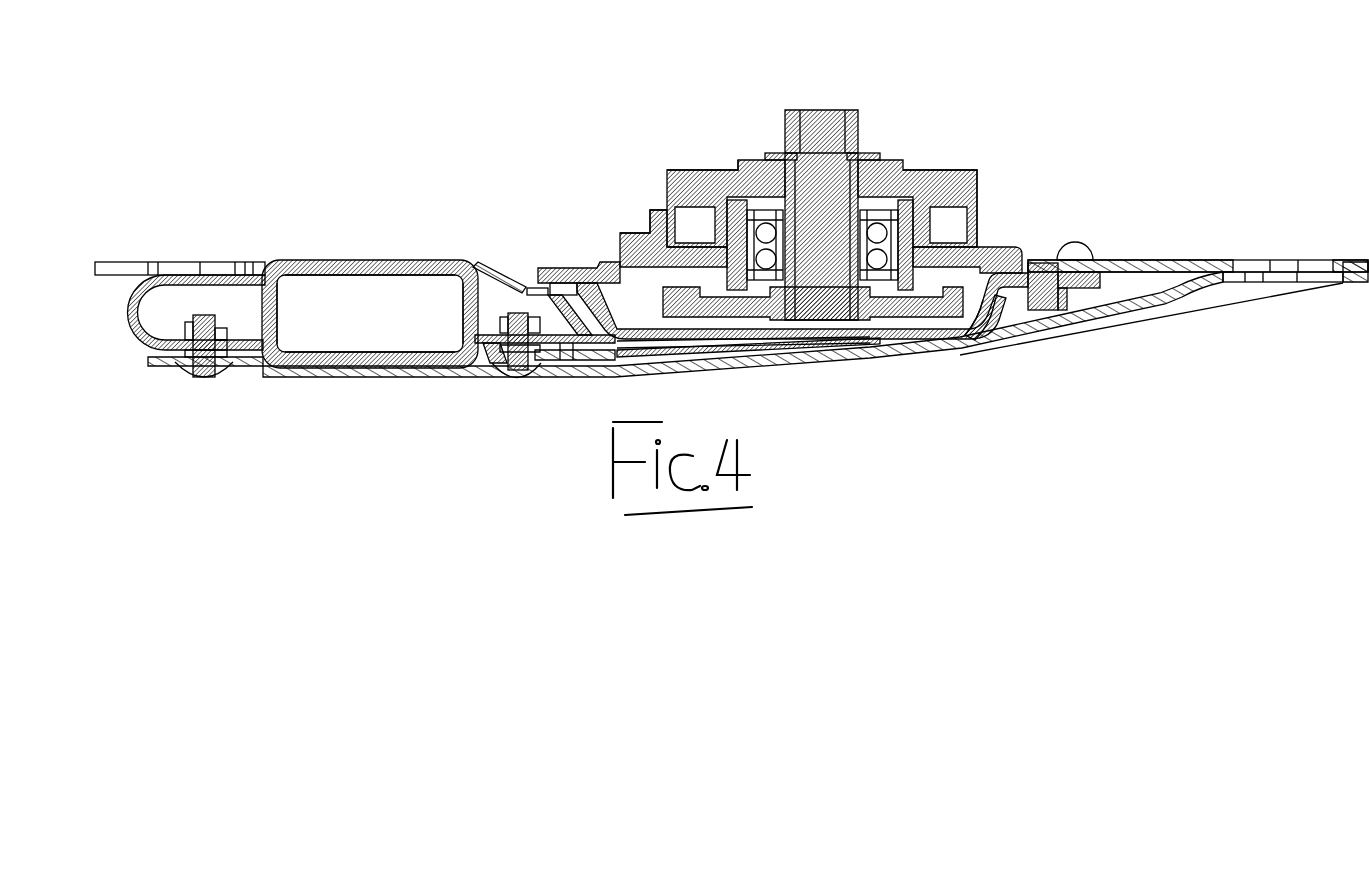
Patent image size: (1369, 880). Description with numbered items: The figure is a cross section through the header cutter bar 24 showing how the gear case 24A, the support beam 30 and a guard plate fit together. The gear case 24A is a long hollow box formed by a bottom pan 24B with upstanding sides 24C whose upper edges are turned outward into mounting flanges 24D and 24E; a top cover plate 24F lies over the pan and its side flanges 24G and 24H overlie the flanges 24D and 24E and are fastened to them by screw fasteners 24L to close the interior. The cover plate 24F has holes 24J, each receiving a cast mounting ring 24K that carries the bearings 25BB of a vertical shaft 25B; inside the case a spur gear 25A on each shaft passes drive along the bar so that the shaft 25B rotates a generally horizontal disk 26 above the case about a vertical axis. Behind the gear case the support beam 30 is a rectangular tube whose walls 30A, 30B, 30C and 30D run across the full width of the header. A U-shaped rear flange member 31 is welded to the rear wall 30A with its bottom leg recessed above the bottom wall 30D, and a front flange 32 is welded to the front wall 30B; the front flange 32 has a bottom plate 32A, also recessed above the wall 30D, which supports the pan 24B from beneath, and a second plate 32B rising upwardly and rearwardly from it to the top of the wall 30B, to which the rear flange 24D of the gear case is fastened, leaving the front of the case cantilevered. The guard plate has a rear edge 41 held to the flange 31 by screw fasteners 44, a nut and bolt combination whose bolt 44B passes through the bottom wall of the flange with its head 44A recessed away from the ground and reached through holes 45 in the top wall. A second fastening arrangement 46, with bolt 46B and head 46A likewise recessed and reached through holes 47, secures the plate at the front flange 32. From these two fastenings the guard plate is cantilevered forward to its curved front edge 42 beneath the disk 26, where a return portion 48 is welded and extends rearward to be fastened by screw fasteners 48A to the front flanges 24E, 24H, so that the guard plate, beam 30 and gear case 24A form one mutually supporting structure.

The cutter bar 24 is at (1018, 166).
The gear case 24A is at (808, 353).
The bottom pan 24B is at (1022, 340).
The upstanding sides 24C is at (1030, 315).
The mounting flange 24D is at (547, 265).
The mounting flange 24E is at (1095, 300).
The top cover plate 24F is at (603, 263).
The side flange 24G is at (540, 267).
The side flange 24H is at (1102, 262).
The holes 24J is at (630, 232).
The cast mounting ring 24K is at (663, 215).
The screw fasteners 24L is at (1105, 300).
The spur gears 25A is at (898, 330).
The vertical shaft 25B is at (817, 120).
The bearings 25BB is at (877, 230).
The disk 26 is at (977, 195).
The support beam 30 is at (287, 373).
The rear upstanding wall 30A is at (268, 302).
The front wall 30B is at (470, 302).
The top wall 30C is at (332, 262).
The bottom wall 30D is at (330, 362).
The rear flange member 31 is at (128, 275).
The front flange 32 is at (483, 367).
The bottom plate 32A is at (547, 373).
The second plate 32B is at (573, 362).
The rear edge 41 is at (155, 368).
The curved front edge 42 is at (1358, 260).
The screw fasteners 44 is at (200, 368).
The head 44A is at (185, 380).
The bolt 44B is at (230, 373).
The holes 45 is at (225, 272).
The second forward fastening arrangement 46 is at (512, 402).
The head 46A is at (495, 393).
The bolt 46B is at (432, 340).
The holes 47 is at (502, 263).
The return portion 48 is at (1197, 260).
The screw fasteners 48A is at (1075, 248).